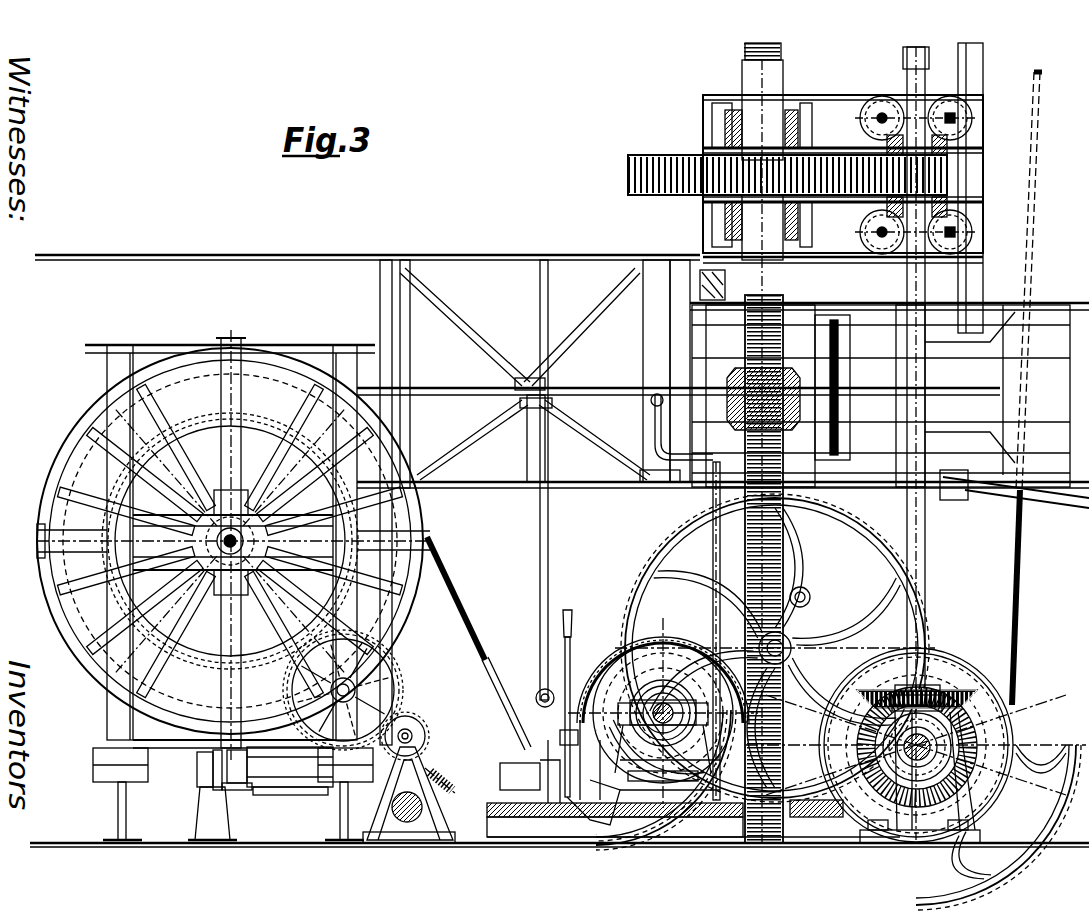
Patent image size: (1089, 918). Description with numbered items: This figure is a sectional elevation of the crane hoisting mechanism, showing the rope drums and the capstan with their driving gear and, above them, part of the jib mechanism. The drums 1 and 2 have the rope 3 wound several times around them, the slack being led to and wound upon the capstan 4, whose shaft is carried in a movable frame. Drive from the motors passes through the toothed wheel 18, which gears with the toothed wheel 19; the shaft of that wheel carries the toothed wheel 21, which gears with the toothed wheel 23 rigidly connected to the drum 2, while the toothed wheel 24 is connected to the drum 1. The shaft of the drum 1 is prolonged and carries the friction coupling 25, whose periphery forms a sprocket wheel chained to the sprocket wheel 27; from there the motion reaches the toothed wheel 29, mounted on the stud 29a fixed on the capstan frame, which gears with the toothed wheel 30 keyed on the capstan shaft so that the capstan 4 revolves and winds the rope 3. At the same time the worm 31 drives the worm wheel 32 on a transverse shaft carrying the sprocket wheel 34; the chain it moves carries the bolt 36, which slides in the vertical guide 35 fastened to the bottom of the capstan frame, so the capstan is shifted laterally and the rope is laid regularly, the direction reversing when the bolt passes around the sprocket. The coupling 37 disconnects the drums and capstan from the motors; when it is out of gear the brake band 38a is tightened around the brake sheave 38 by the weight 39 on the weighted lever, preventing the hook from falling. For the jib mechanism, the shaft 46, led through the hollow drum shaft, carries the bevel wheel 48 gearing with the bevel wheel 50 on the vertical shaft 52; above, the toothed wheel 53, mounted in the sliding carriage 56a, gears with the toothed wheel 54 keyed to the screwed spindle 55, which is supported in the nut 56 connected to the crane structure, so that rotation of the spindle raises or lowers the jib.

The drum 1 is at (535, 722).
The drum 2 is at (1013, 760).
The rope 3 is at (462, 600).
The capstan 4 is at (390, 450).
The toothed wheel 18 is at (650, 690).
The toothed wheel 19 is at (835, 520).
The toothed wheel 21 is at (812, 590).
The toothed wheel 23 is at (968, 590).
The toothed wheel 24 is at (528, 625).
The friction coupling 25 is at (640, 817).
The sprocket wheel 27 is at (395, 700).
The toothed wheel 29 is at (395, 668).
The stud 29a is at (340, 628).
The toothed wheel 30 is at (359, 522).
The worm 31 is at (447, 795).
The worm wheel 32 is at (392, 780).
The sprocket wheel 34 is at (237, 790).
The vertical guide 35 is at (212, 813).
The bolt 36 is at (200, 760).
The coupling 37 is at (635, 700).
The brake sheave 38 is at (618, 655).
The brake band 38a is at (660, 650).
The weight 39 is at (500, 772).
The shaft 46 is at (912, 790).
The bevel wheel 48 is at (978, 742).
The bevel wheel 50 is at (1012, 668).
The vertical shaft 52 is at (925, 400).
The toothed wheel 53 is at (945, 152).
The toothed wheel 54 is at (628, 176).
The screwed spindle 55 is at (785, 300).
The nut 56 is at (800, 395).
The carriage 56a is at (703, 118).